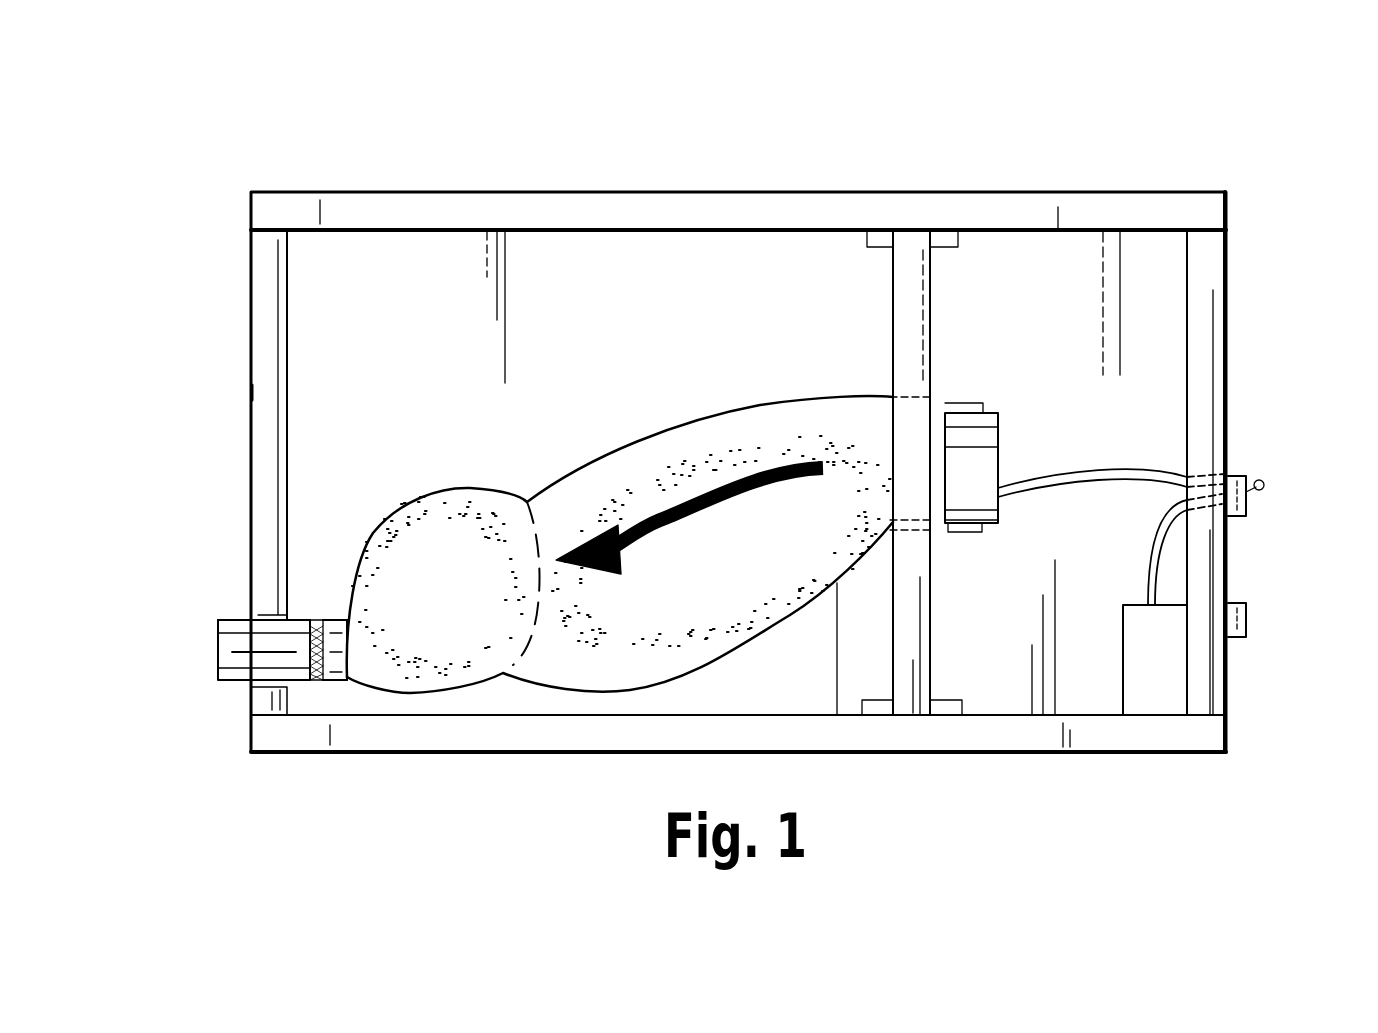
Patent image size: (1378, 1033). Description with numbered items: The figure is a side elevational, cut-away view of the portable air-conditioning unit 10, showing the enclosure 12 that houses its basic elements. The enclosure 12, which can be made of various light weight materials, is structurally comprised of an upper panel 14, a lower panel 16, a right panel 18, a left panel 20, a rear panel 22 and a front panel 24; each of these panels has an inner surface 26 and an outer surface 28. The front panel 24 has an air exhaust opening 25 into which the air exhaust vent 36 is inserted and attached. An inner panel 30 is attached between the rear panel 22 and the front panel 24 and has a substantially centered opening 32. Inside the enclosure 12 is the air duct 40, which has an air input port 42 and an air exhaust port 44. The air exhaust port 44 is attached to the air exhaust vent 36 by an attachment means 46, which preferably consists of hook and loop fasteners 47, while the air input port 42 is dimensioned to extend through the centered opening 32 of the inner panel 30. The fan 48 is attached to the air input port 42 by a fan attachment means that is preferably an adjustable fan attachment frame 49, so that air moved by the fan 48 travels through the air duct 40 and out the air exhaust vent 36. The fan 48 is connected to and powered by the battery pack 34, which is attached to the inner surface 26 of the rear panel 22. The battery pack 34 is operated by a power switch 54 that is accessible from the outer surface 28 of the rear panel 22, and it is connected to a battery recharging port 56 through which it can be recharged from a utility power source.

The dispenser device 10 is at (1222, 116).
The enclosure 12 is at (1157, 252).
The upper panel 14 is at (298, 212).
The lower panel 16 is at (266, 728).
The right panel 18 is at (417, 280).
The left panel 20 is at (530, 272).
The rear panel 22 is at (1200, 364).
The front panel 24 is at (265, 282).
The air exhaust opening 25 is at (245, 614).
The inner surface 26 is at (287, 293).
The outer surface 28 is at (251, 393).
The inner panel 30 is at (908, 302).
The centered opening 32 is at (912, 407).
The battery pack 34 is at (1165, 643).
The air exhaust vent 36 is at (247, 659).
The air duct 40 is at (642, 472).
The air input port 42 is at (937, 418).
The air exhaust port 44 is at (337, 620).
The attachment means 46 is at (310, 620).
The hook and loop fasteners 47 is at (335, 650).
The fan 48 is at (983, 458).
The adjustable fan attachment frame 49 is at (1183, 566).
The power switch 54 is at (1262, 500).
The battery recharging port 56 is at (1248, 612).